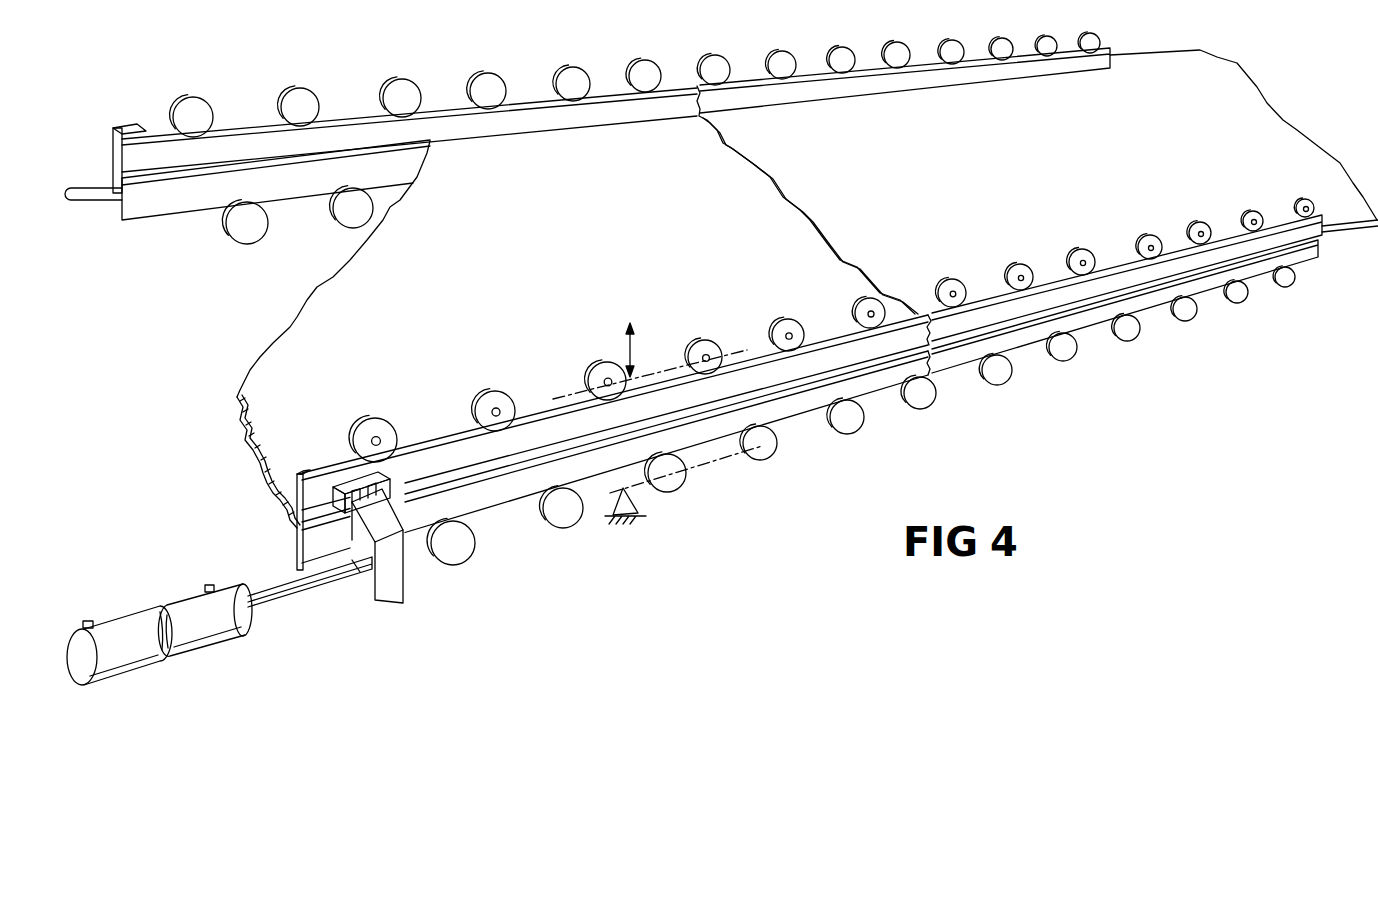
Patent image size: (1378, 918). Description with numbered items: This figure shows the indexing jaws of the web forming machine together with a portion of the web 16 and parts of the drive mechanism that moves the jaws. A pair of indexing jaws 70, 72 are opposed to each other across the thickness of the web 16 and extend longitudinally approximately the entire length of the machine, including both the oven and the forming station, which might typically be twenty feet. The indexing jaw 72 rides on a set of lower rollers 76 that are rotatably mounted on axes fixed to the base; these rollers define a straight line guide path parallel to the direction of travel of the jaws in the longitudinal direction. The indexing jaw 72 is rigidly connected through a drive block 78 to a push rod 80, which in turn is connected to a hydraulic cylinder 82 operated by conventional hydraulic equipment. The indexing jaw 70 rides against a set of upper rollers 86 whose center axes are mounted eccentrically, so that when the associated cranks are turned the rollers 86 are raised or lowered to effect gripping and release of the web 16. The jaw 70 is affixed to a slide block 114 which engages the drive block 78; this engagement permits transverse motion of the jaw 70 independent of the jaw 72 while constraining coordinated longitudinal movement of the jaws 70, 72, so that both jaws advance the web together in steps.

The web 16 is at (627, 234).
The indexing jaw 70 is at (1114, 54).
The indexing jaw 72 is at (504, 508).
The lower rollers 76 is at (347, 217).
The drive block 78 is at (113, 160).
The push rod 80 is at (81, 200).
The hydraulic cylinder 82 is at (148, 666).
The upper rollers 86 is at (315, 103).
The slide block 114 is at (386, 479).